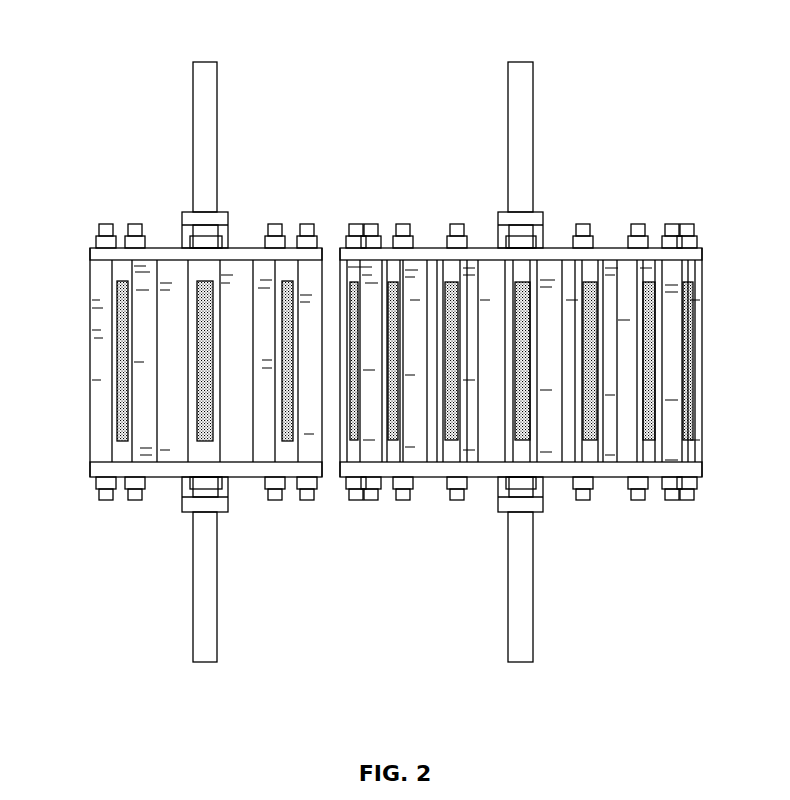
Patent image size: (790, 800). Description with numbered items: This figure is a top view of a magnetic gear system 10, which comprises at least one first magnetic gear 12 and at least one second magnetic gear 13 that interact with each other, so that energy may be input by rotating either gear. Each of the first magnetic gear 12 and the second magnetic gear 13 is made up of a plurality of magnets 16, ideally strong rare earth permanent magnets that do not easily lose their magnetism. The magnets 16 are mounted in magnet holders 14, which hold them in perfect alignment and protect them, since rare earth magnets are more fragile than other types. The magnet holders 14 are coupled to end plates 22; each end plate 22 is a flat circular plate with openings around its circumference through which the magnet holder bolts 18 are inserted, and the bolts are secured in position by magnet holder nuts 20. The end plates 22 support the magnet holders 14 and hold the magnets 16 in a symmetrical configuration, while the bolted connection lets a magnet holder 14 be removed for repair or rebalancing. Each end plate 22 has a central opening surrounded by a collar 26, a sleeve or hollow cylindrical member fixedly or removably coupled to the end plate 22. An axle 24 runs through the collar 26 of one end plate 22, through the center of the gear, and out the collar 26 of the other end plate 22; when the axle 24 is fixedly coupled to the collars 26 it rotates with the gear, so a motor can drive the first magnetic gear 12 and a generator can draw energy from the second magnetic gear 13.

The magnetic gear system 10 is at (128, 40).
The first magnetic gear 12 is at (702, 330).
The second magnetic gear 13 is at (90, 385).
The magnet holder 14 is at (288, 277).
The magnet 16 is at (293, 288).
The magnet holder bolt 18 is at (135, 224).
The magnet holder nut 20 is at (140, 236).
The end plate 22 is at (90, 255).
The axle 24 is at (218, 143).
The collar 26 is at (187, 215).